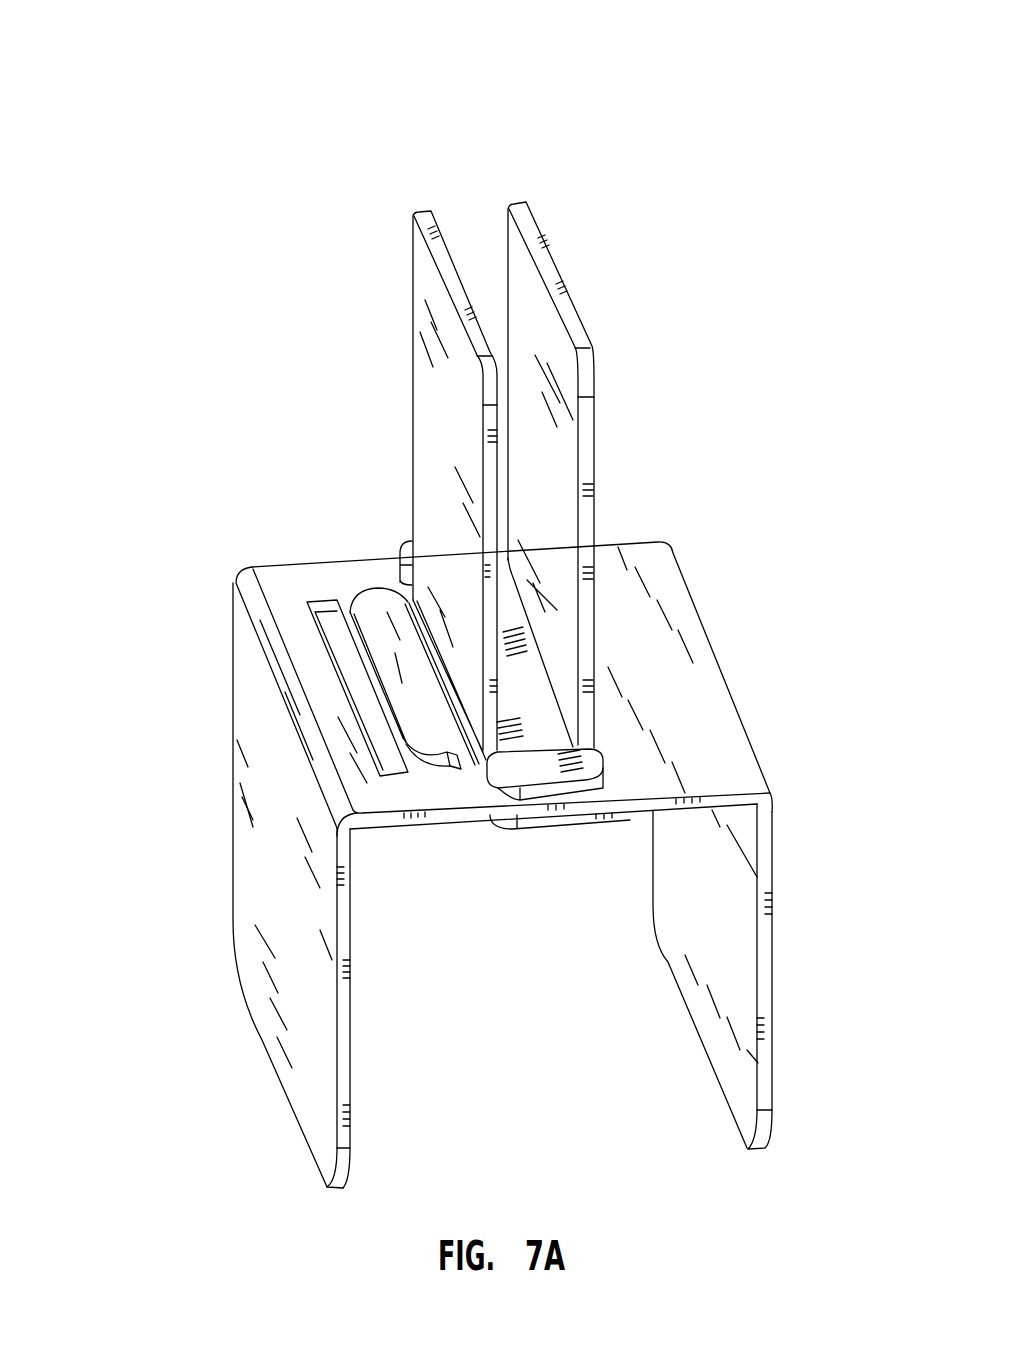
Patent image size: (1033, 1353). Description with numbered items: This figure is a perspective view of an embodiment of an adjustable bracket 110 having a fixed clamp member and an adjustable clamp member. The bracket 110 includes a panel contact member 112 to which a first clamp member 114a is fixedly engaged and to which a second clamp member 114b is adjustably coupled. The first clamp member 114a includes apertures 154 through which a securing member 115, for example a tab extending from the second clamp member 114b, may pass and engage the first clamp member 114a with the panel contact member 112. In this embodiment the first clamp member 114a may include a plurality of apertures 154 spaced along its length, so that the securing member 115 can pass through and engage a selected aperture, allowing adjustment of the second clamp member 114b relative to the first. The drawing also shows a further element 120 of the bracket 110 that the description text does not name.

The bracket 110 is at (647, 152).
The panel contact member 112 is at (345, 262).
The second fin 120 is at (660, 375).
The apertures 154 is at (300, 568).
The securing member 115 is at (370, 603).
The first clamp member 114a is at (172, 897).
The second clamp member 114b is at (840, 836).